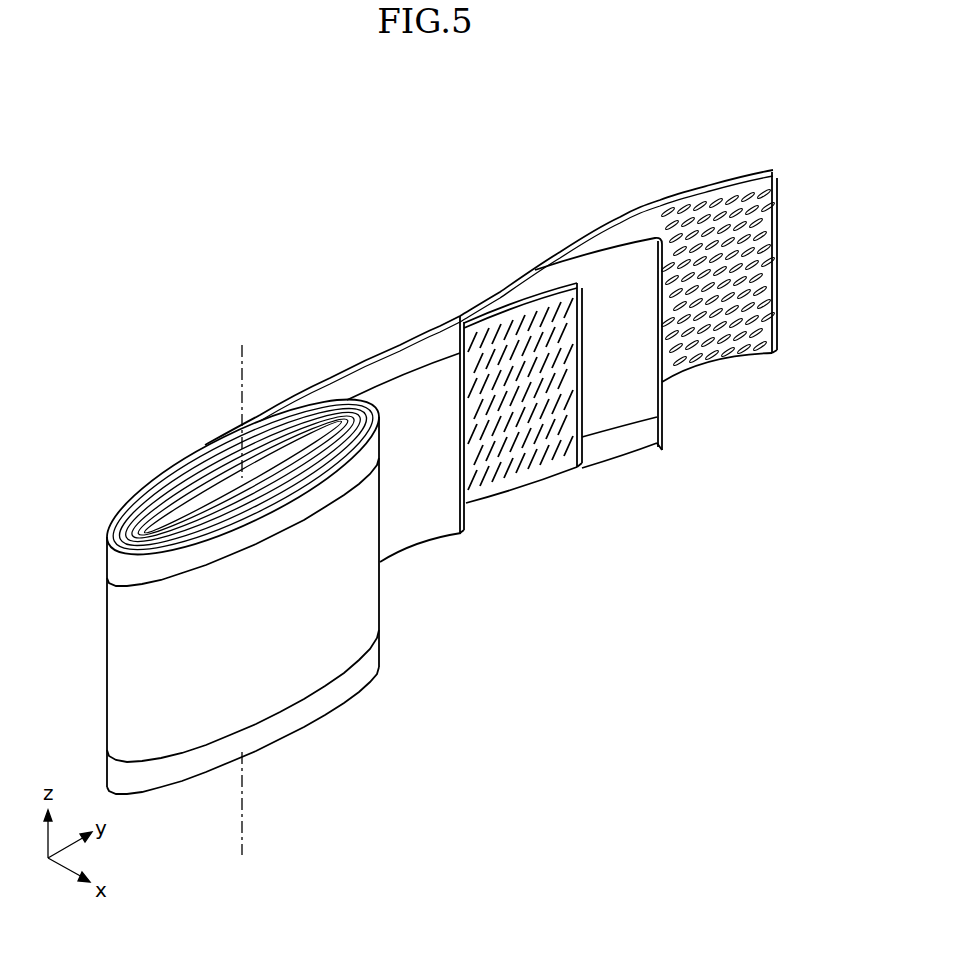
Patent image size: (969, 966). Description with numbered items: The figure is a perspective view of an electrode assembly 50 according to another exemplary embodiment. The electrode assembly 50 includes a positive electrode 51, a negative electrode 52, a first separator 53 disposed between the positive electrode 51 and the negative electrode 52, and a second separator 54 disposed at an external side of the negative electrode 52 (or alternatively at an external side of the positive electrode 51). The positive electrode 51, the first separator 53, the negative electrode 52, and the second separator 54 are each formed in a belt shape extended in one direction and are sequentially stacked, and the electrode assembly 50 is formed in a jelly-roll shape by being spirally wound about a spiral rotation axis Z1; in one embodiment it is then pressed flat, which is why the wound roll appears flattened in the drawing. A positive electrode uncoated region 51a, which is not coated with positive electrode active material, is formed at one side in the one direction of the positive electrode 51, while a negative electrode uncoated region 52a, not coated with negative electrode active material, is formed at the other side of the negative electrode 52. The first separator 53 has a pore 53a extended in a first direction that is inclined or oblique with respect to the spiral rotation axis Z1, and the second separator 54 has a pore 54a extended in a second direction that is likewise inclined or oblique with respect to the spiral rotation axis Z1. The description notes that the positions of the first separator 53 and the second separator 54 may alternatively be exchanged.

The electrode assembly 50 is at (164, 449).
The positive electrode 51 is at (413, 527).
The positive electrode uncoated region 51a is at (392, 360).
The negative electrode 52 is at (597, 263).
The negative electrode uncoated region 52a is at (613, 442).
The first separator 53 is at (546, 467).
The pore 53a is at (488, 330).
The second separator 54 is at (737, 183).
The pore 54a is at (693, 202).
The spiral rotation axis Z1 is at (242, 812).